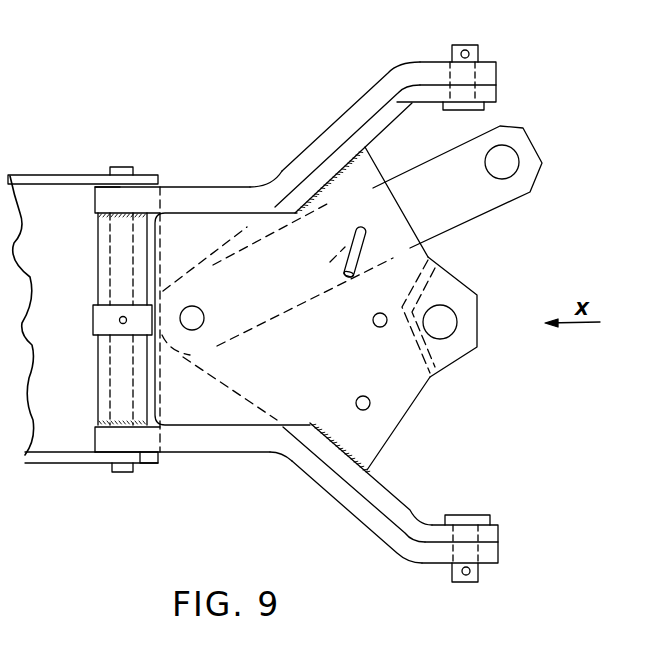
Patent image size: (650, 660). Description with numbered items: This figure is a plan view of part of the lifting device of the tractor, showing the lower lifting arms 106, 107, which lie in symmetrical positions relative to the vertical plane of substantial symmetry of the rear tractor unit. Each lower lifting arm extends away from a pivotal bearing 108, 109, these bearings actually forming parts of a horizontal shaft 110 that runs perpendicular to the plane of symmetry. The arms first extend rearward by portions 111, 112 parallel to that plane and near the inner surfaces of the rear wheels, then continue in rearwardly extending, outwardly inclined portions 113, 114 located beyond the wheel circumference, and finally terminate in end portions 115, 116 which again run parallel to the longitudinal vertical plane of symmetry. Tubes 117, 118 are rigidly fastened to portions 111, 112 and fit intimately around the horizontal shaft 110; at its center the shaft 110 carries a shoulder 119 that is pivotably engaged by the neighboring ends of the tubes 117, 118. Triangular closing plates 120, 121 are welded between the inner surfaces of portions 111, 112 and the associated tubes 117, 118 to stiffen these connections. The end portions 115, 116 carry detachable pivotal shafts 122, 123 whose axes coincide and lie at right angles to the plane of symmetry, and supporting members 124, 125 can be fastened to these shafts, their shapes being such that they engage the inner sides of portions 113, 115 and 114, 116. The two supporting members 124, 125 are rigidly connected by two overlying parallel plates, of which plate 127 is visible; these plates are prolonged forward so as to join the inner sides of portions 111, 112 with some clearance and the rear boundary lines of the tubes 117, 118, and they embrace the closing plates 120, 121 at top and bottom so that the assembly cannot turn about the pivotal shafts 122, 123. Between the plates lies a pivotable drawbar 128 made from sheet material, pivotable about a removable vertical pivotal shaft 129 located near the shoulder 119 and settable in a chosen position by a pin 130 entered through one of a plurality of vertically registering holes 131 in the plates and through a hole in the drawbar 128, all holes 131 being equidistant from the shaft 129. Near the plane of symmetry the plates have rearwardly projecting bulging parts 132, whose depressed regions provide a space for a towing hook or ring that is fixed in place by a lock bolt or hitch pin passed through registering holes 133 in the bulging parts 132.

The lower lifting arm 106 is at (296, 460).
The lower lifting arm 107 is at (284, 175).
The pivotal bearing 108 is at (112, 190).
The pivotal bearing 109 is at (152, 457).
The horizontal shaft 110 is at (122, 473).
The portion of lower lifting arm 111 is at (238, 447).
The portion of lower lifting arm 112 is at (215, 176).
The outwardly inclined portion 113 is at (338, 488).
The outwardly inclined portion 114 is at (320, 138).
The end portion 115 is at (443, 555).
The end portion 116 is at (417, 68).
The tube 117 is at (103, 373).
The tube 118 is at (99, 245).
The shoulder 119 is at (97, 318).
The triangular closing plate 120 is at (252, 400).
The triangular closing plate 121 is at (197, 242).
The pivotal shaft 122 is at (463, 578).
The pivotal shaft 123 is at (474, 53).
The supporting member 124 is at (410, 507).
The supporting member 125 is at (397, 105).
The plate 127 is at (412, 410).
The drawbar 128 is at (502, 196).
The vertical pivotal shaft 129 is at (193, 317).
The pin 130 is at (346, 245).
The hole 131 is at (373, 319).
The bulging part 132 is at (465, 352).
The hole 133 is at (442, 315).